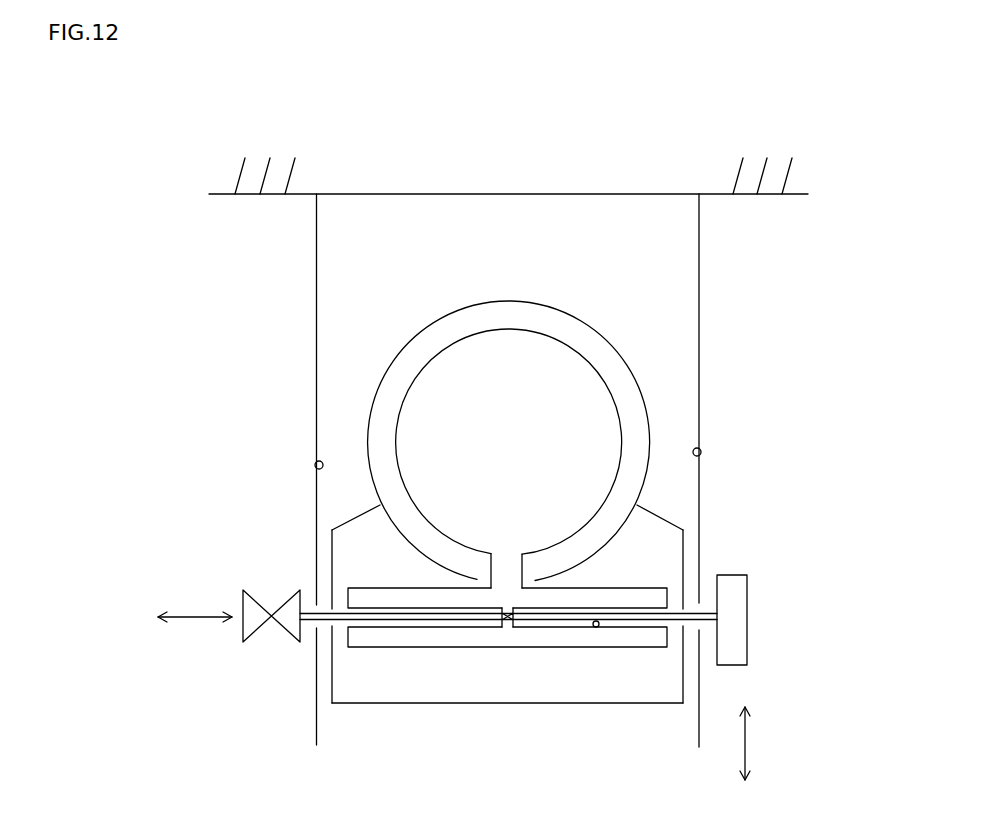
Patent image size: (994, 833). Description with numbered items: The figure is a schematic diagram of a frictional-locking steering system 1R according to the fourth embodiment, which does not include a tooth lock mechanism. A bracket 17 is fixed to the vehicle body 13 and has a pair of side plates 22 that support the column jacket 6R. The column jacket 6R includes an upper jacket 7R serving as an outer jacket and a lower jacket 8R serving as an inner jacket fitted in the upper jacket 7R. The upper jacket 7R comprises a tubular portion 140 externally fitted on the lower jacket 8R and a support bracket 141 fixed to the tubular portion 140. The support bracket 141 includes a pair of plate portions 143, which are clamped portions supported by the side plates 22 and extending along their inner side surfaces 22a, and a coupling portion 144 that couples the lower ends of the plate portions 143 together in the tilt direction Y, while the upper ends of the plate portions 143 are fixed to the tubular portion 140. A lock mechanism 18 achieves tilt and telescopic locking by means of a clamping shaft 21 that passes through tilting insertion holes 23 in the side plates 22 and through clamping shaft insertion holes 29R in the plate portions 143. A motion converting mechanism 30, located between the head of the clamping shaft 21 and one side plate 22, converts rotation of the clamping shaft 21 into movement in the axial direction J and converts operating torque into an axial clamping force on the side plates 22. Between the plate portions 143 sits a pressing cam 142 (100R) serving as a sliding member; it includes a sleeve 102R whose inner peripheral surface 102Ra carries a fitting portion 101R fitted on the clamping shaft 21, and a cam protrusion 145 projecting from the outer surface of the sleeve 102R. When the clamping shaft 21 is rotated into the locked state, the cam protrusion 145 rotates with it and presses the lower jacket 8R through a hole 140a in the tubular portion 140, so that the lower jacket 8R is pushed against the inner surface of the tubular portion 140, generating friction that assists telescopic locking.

The steering system 1R is at (632, 160).
The vehicle body 13 is at (276, 181).
The bracket 17 is at (703, 267).
The side plates 22 is at (316, 340).
The inner side surfaces 22a is at (312, 462).
The tubular portion 140 is at (650, 410).
The column jacket 6R is at (568, 257).
The upper jacket 7R is at (503, 302).
The lower jacket 8R is at (542, 330).
The cam protrusion 145 is at (488, 560).
The hole 140a is at (572, 526).
The support bracket 141 is at (655, 512).
The plate portions 143 is at (331, 547).
The clamping shaft insertion holes 29R is at (337, 627).
The coupling portion 144 is at (548, 705).
The pressing cam 142 is at (408, 650).
The holding unit 100R is at (507, 667).
The sleeve 102R is at (460, 650).
The fitting portion 101R is at (505, 628).
The inner peripheral surface 102Ra is at (597, 628).
The clamping shaft 21 is at (382, 613).
The motion converting mechanism 30 is at (285, 636).
The tilting insertion holes 23 is at (297, 610).
The lock mechanism 18 is at (233, 598).
The axial direction J is at (198, 621).
The tilt direction Y is at (750, 740).